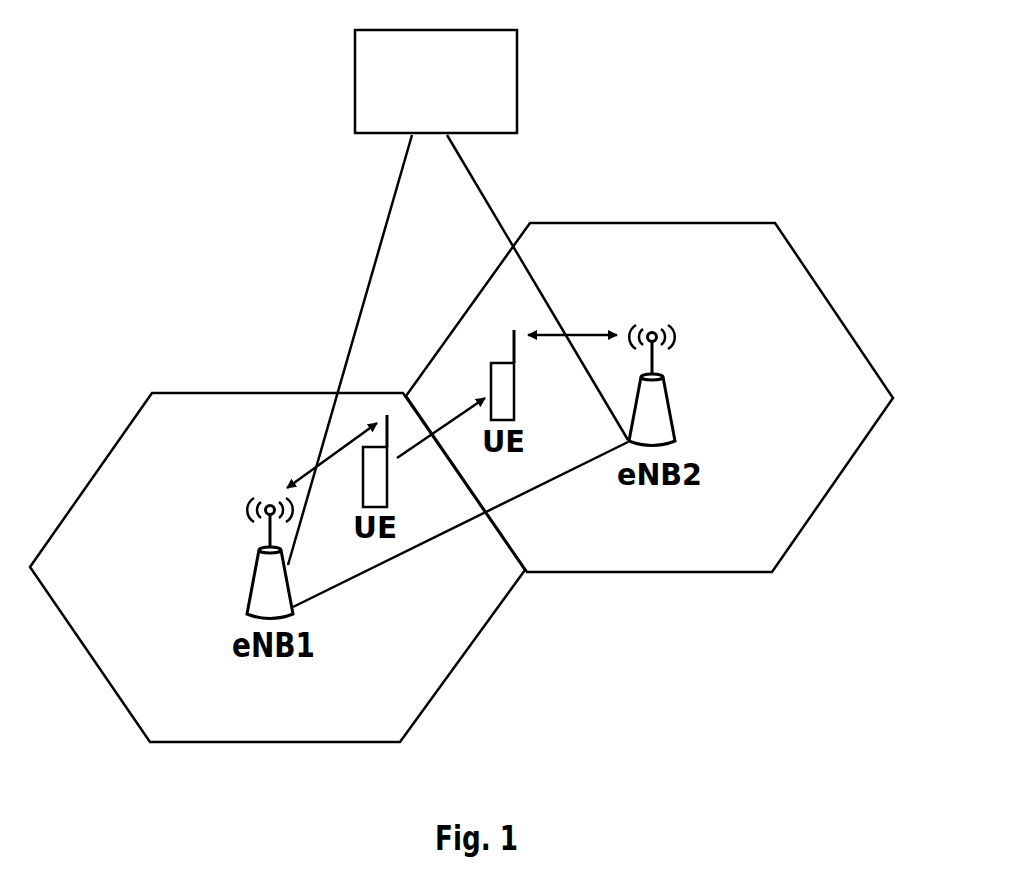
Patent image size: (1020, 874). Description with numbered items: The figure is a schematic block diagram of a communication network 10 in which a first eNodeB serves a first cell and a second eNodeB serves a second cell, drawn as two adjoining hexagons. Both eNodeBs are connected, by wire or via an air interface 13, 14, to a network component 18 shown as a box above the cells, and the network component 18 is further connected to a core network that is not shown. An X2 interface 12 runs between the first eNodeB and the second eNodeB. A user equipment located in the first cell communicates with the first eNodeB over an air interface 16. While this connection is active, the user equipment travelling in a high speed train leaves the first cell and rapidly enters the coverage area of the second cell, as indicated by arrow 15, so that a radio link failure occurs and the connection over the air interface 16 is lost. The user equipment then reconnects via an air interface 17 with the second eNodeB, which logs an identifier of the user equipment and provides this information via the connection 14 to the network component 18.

The communication network 10 is at (223, 223).
The X2 interface 12 is at (460, 524).
The air interface 13 is at (350, 350).
The air interface 14 is at (537, 287).
The arrow 15 is at (441, 423).
The air interface 16 is at (324, 455).
The air interface 17 is at (572, 314).
The network component 18 is at (436, 81).